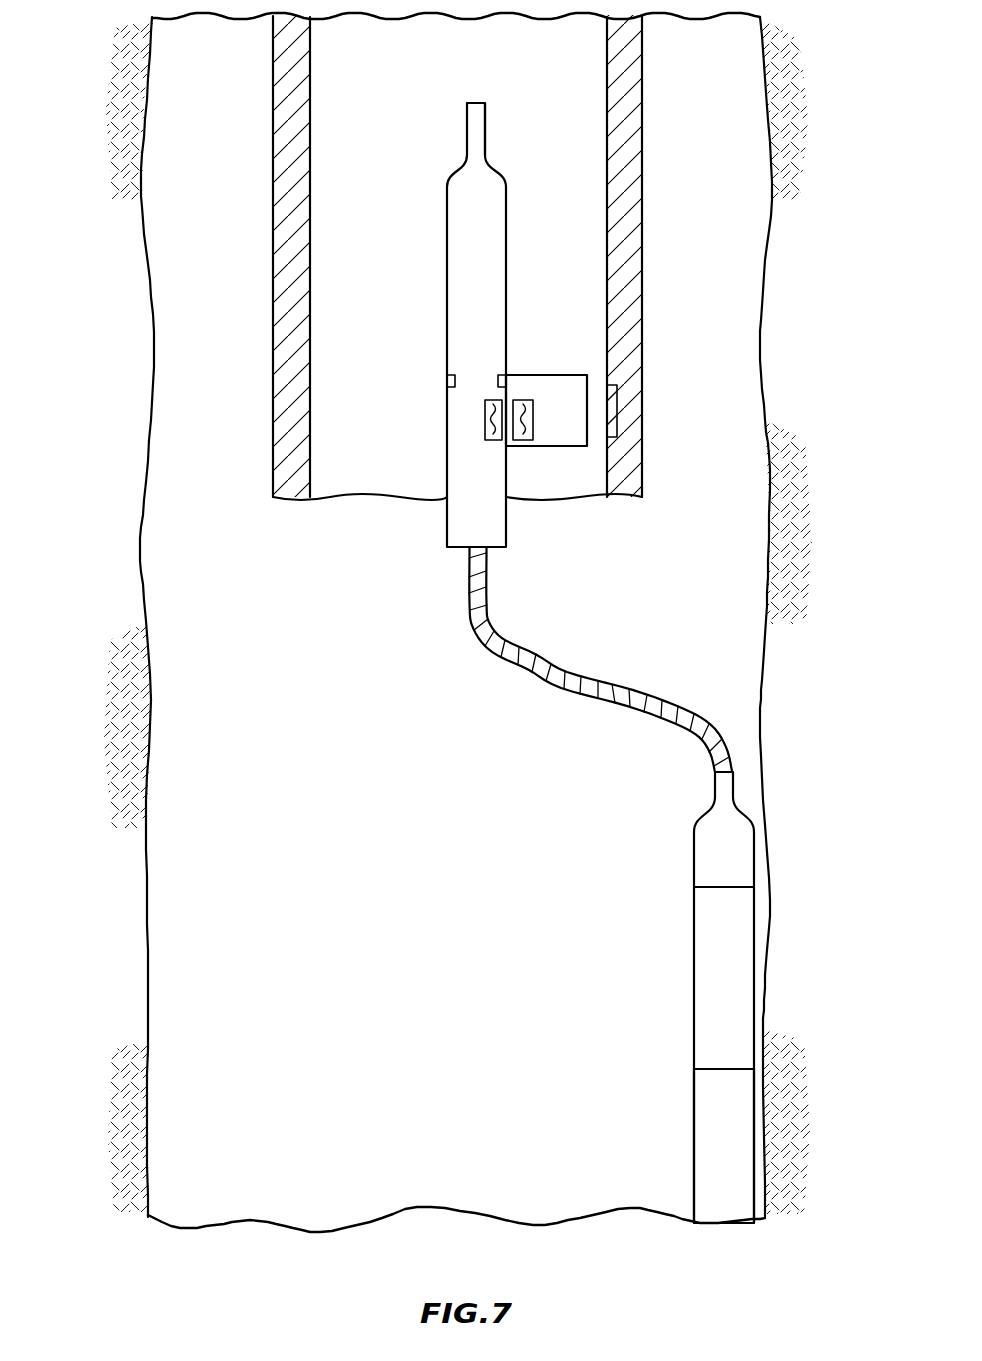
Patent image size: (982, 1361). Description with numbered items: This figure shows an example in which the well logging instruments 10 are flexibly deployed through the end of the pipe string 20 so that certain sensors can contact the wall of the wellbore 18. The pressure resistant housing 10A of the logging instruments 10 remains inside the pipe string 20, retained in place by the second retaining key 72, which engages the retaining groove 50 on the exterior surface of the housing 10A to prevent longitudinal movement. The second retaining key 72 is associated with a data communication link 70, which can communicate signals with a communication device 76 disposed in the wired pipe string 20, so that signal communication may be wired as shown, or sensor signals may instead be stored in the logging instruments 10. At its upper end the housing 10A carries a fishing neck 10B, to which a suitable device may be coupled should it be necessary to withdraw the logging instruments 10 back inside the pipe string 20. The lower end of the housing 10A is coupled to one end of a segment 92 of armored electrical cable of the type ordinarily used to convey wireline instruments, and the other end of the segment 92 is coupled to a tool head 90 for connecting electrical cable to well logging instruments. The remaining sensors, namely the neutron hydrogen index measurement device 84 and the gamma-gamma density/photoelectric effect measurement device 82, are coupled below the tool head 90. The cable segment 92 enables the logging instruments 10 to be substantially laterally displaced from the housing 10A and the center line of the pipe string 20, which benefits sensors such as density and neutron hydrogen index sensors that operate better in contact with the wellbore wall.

The logging instruments 10 is at (547, 790).
The pressure resistant housing 10A is at (446, 448).
The fishing neck 10B is at (466, 120).
The wellbore 18 is at (248, 930).
The pipe string 20 is at (642, 190).
The retaining groove 50 is at (447, 381).
The data communication link 70 is at (588, 386).
The second retaining key 72 is at (503, 381).
The communication device 76 is at (617, 410).
The gamma-gamma density/photoelectric effect measurement device 82 is at (694, 1113).
The neutron hydrogen index measurement device 84 is at (694, 958).
The tool head 90 is at (694, 858).
The segment of armored electrical cable 92 is at (573, 685).